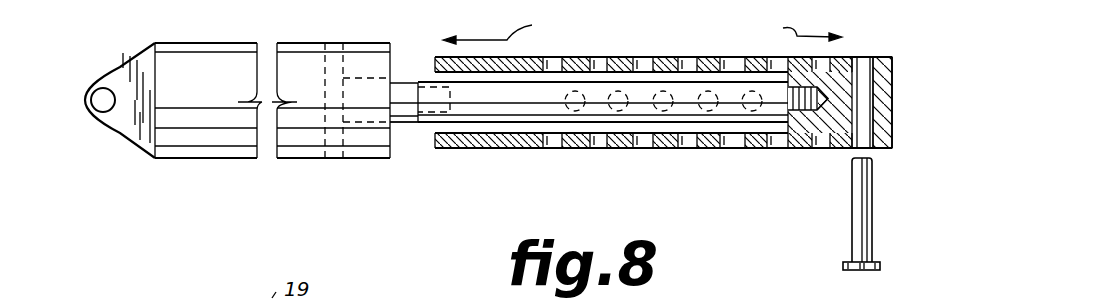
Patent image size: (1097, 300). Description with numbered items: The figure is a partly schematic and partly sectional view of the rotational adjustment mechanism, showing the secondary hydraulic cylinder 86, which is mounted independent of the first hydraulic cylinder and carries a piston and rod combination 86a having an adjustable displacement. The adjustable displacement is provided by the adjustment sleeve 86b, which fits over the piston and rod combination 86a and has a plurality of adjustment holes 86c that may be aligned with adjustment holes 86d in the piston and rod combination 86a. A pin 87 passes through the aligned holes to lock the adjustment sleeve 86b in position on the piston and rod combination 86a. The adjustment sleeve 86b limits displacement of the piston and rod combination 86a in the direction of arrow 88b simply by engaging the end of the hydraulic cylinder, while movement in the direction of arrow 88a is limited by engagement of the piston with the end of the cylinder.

The secondary hydraulic cylinder 86 is at (293, 55).
The piston and rod combination 86a is at (343, 87).
The adjustment sleeve 86b is at (616, 57).
The adjustment holes 86c is at (562, 147).
The adjustment holes 86d is at (574, 103).
The arrow 88a is at (787, 29).
The arrow 88b is at (511, 29).
The pin 87 is at (852, 192).